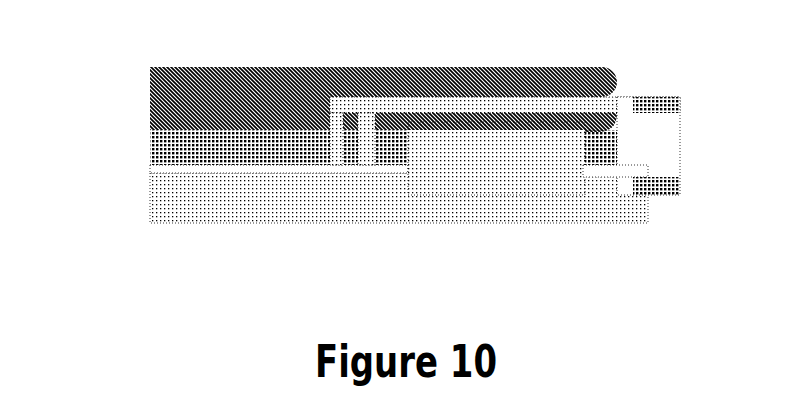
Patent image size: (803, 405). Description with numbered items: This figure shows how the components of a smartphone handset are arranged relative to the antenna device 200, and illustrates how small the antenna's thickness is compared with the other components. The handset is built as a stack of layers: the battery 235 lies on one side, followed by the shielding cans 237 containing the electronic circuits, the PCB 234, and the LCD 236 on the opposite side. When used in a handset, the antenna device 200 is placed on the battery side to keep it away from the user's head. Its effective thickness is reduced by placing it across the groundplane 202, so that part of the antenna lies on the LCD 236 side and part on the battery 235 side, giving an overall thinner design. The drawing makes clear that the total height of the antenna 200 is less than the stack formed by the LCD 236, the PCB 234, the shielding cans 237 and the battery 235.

The antenna device 200 is at (398, 121).
The groundplane 202 is at (642, 166).
The PCB 234 is at (150, 167).
The battery 235 is at (150, 107).
The LCD 236 is at (150, 197).
The shielding cans 237 is at (150, 146).